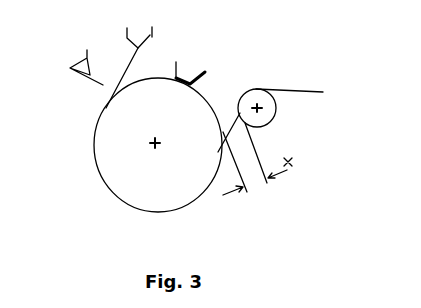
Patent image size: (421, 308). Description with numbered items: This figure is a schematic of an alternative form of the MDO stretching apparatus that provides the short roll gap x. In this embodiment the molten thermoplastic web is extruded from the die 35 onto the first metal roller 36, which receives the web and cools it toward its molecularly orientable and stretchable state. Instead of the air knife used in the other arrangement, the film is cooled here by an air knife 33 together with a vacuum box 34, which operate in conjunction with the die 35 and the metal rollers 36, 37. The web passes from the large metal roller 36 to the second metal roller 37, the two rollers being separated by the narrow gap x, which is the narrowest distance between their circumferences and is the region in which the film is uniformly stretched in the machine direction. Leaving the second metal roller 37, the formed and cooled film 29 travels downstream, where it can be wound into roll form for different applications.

The film 29 is at (292, 89).
The air knife 33 is at (83, 58).
The vacuum box 34 is at (196, 60).
The die 35 is at (152, 32).
The metal roller 36 is at (126, 204).
The metal roller 37 is at (277, 110).